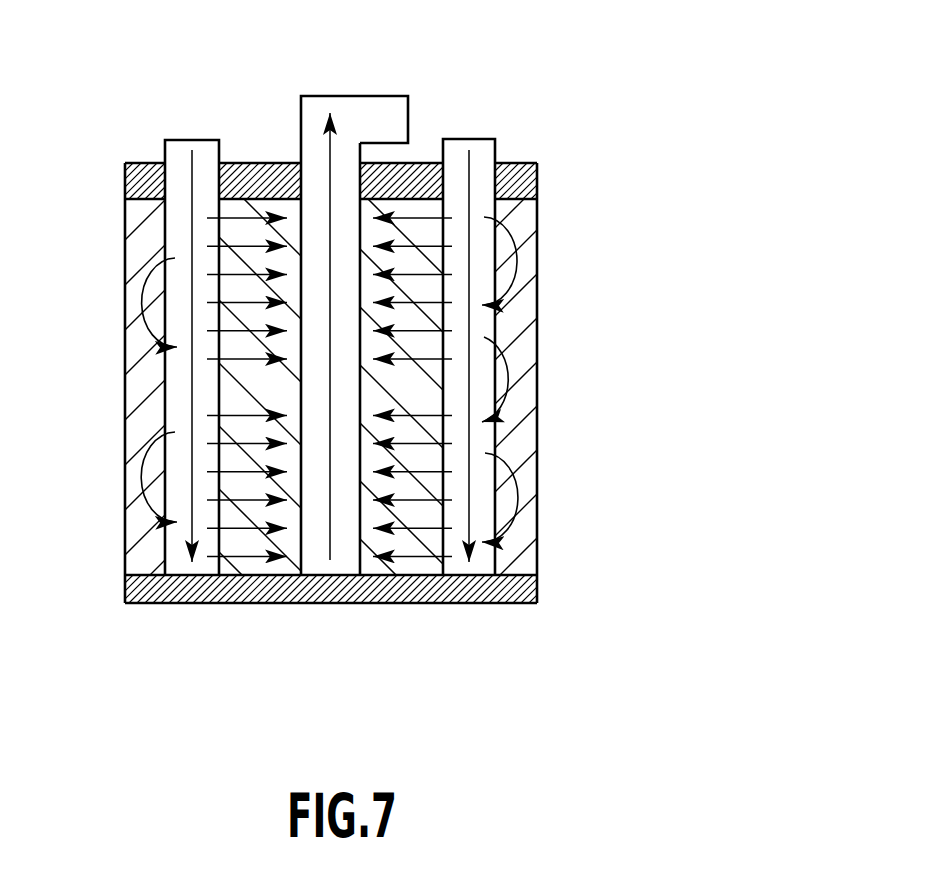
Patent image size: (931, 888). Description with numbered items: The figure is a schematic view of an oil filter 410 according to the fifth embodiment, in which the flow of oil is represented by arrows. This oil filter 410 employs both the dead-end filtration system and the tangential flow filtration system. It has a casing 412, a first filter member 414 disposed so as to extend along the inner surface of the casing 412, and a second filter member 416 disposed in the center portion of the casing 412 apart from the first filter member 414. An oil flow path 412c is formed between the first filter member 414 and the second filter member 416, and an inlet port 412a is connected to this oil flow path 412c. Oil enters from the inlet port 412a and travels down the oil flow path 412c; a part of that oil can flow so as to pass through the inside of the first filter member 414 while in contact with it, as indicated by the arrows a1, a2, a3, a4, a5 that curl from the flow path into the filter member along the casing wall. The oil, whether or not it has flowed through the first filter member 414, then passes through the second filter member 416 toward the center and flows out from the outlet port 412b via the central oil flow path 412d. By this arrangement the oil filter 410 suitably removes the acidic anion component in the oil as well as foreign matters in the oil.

The oil filter 410 is at (662, 401).
The casing 412 is at (537, 418).
The inlet port 412a is at (177, 148).
The outlet port 412b is at (397, 108).
The oil flow path 412c is at (203, 570).
The central oil flow path 412d is at (340, 568).
The first filter member 414 is at (525, 458).
The second filter member 416 is at (415, 568).
The arrow a1 is at (518, 266).
The arrow a2 is at (518, 378).
The arrow a3 is at (518, 497).
The arrow a4 is at (144, 310).
The arrow a5 is at (144, 479).